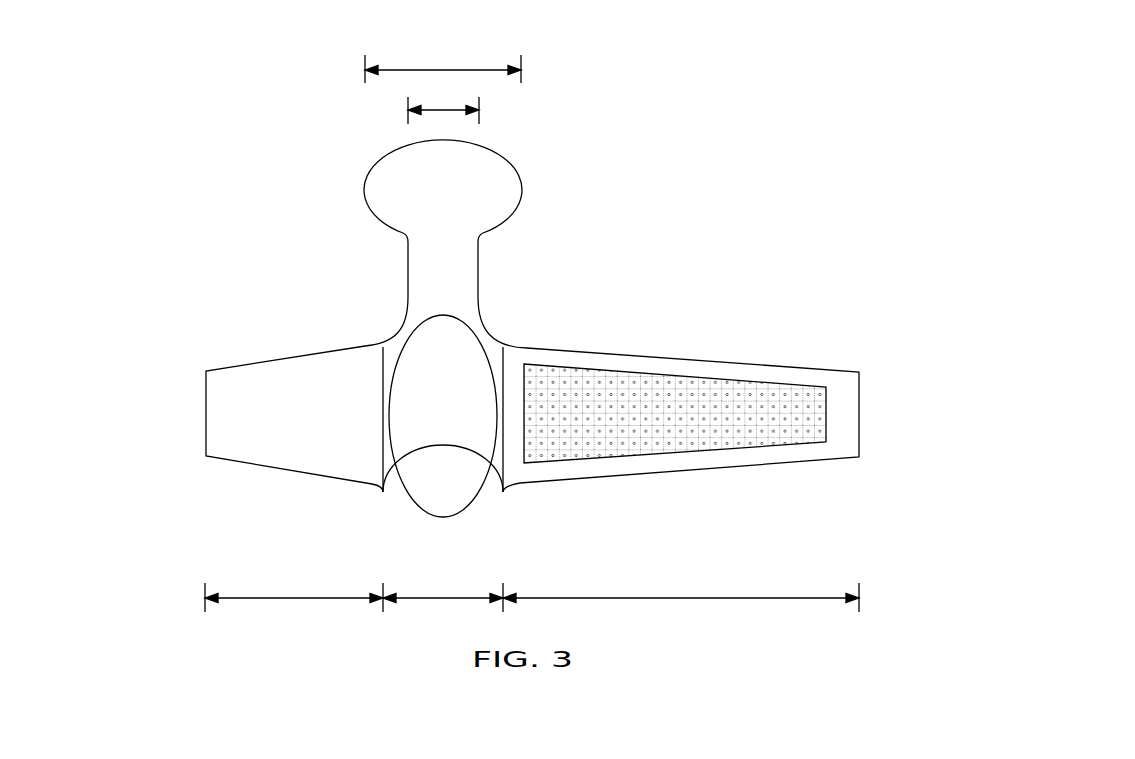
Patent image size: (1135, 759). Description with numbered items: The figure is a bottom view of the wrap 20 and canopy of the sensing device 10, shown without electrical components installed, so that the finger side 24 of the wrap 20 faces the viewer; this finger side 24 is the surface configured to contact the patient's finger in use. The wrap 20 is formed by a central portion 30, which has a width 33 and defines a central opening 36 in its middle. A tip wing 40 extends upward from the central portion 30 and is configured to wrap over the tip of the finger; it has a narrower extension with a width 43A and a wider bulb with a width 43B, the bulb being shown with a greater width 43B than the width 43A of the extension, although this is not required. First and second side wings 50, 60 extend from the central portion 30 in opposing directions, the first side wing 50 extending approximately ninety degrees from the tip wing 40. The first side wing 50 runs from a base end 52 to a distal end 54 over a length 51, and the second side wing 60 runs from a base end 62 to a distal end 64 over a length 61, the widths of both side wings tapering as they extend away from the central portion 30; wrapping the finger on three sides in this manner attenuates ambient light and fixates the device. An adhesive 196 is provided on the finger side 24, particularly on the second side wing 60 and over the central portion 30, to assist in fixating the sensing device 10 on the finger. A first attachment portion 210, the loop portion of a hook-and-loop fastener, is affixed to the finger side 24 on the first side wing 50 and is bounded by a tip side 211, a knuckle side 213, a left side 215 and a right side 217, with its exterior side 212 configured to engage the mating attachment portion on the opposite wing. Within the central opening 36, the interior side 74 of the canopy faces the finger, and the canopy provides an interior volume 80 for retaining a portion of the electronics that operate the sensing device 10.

The sensing device 10 is at (714, 91).
The wrap 20 is at (312, 496).
The finger side 24 is at (225, 445).
The central portion 30 is at (478, 515).
The width 33 is at (420, 597).
The central opening 36 is at (446, 497).
The tip wing 40 is at (478, 263).
The width 43A is at (443, 115).
The width 43B is at (445, 69).
The first side wing 50 is at (840, 385).
The length 51 is at (682, 597).
The base end 52 is at (527, 345).
The distal end 54 is at (860, 380).
The second side wing 60 is at (223, 420).
The length 61 is at (280, 596).
The base end 62 is at (380, 365).
The distal end 64 is at (206, 378).
The interior side 74 is at (445, 368).
The interior volume 80 is at (421, 479).
The adhesive 196 is at (290, 378).
The first attachment portion 210 is at (660, 362).
The tip side 211 is at (597, 370).
The exterior side 212 is at (727, 380).
The knuckle side 213 is at (617, 460).
The left side 215 is at (825, 433).
The right side 217 is at (523, 455).